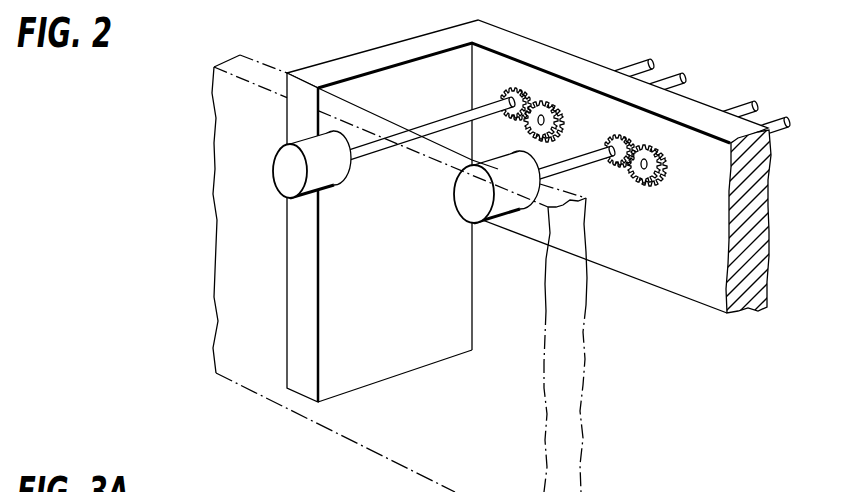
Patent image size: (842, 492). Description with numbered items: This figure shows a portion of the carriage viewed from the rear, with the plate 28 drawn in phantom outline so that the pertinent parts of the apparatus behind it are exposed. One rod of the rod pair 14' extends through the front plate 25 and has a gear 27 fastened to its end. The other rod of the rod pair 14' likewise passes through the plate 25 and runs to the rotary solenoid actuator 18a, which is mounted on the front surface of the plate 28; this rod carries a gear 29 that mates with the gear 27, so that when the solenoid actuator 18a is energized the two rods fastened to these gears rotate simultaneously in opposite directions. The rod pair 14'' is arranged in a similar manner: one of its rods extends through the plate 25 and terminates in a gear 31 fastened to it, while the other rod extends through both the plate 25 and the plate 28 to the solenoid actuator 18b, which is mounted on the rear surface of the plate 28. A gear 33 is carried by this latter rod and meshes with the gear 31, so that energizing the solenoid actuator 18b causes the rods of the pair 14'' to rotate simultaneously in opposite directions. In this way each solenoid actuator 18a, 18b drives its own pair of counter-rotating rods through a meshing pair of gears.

The plate 28 is at (232, 62).
The front plate 25 is at (500, 40).
The gear 29 is at (500, 95).
The gear 27 is at (550, 108).
The gear 33 is at (607, 141).
The gear 31 is at (660, 157).
The rotary solenoid actuator 18a is at (285, 170).
The solenoid actuator 18b is at (462, 194).
The rod pair 14' is at (657, 69).
The rod pair 14'' is at (756, 114).